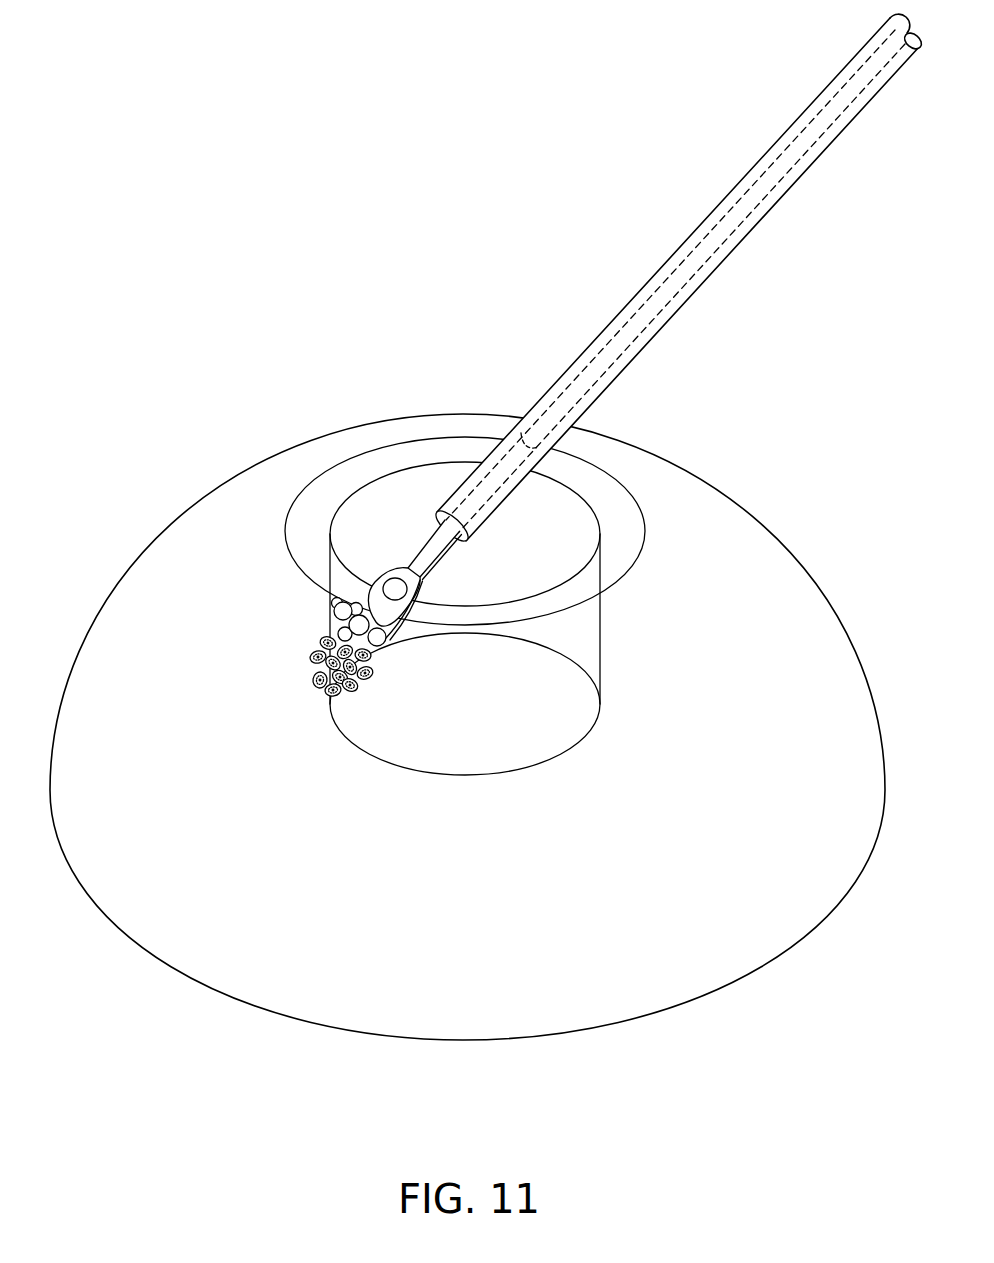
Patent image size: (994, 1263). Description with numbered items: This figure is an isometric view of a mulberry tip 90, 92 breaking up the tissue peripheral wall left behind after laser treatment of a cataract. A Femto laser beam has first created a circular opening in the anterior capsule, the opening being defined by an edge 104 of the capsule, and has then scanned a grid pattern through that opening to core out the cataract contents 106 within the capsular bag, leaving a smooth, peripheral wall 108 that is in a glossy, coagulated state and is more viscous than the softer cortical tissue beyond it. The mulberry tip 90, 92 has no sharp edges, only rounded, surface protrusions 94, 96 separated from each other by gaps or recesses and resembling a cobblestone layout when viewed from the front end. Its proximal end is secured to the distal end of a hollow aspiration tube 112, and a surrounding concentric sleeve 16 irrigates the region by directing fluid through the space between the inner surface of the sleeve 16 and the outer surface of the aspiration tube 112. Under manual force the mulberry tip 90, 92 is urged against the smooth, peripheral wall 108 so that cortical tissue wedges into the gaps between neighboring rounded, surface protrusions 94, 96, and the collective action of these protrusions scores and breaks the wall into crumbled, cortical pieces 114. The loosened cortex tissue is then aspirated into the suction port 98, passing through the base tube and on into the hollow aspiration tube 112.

The surrounding concentric sleeve 16 is at (677, 280).
The hollow aspiration tube 112 is at (732, 252).
The edge of the capsule 104 is at (377, 477).
The mulberry tip 90 is at (368, 506).
The mulberry tip 92 is at (368, 506).
The suction port 98 is at (403, 564).
The cataract contents 106 is at (148, 538).
The smooth peripheral wall 108 is at (522, 690).
The crumbled cortical pieces 114 is at (318, 681).
The rounded surface protrusions 94 is at (297, 831).
The rounded surface protrusions 96 is at (378, 648).